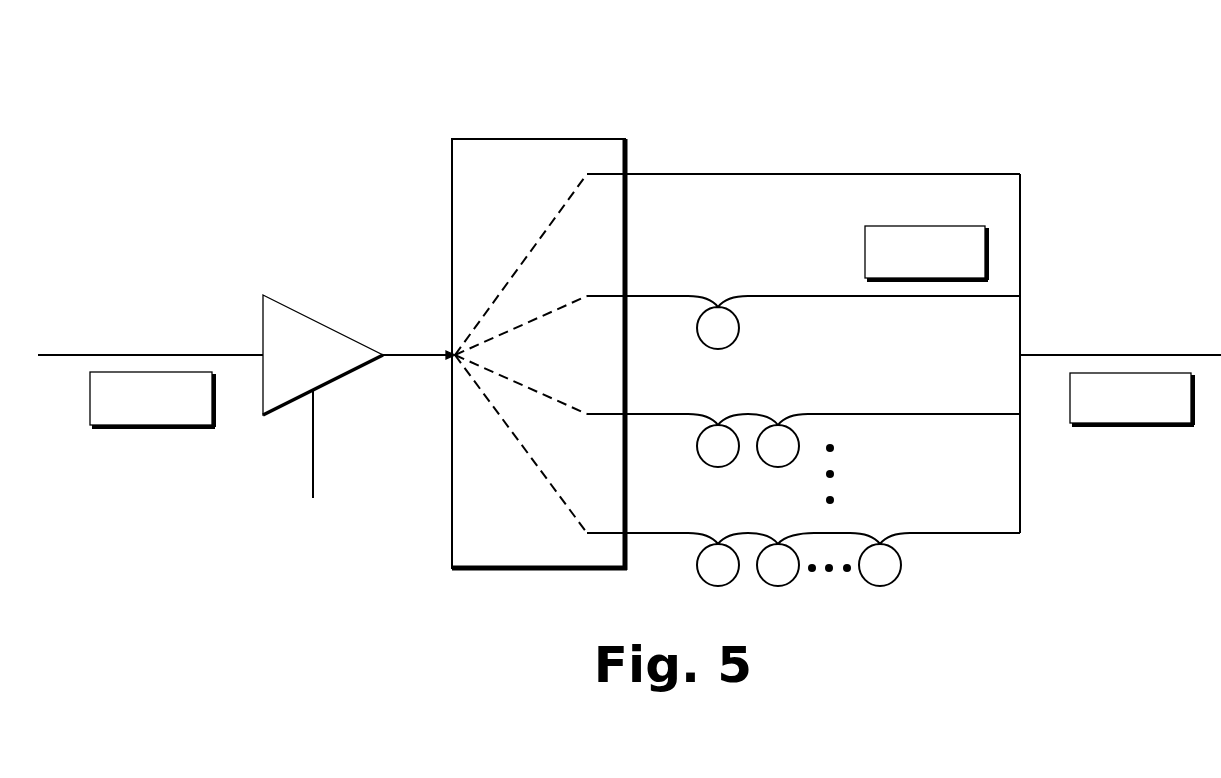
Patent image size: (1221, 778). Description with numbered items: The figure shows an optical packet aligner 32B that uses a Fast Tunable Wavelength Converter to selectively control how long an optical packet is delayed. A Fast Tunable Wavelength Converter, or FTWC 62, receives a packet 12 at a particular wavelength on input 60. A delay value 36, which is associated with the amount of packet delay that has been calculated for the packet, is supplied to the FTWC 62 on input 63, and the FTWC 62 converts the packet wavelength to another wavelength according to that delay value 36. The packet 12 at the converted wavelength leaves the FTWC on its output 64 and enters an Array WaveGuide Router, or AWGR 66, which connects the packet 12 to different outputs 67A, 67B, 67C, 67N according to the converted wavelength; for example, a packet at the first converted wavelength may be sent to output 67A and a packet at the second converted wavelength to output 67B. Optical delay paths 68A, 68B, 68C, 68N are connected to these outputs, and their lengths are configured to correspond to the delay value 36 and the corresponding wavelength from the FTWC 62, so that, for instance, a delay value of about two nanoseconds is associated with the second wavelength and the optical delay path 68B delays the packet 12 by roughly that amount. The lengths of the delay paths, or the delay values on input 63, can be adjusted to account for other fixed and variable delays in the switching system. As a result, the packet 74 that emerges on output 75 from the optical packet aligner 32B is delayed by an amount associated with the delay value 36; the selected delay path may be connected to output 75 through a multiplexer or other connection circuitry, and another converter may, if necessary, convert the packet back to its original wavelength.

The packet 12 is at (148, 427).
The optical packet aligner 32B is at (1084, 113).
The delay value 36 is at (312, 548).
The input 60 is at (85, 354).
The Fast Tunable Wavelength Converter (FTWC) 62 is at (325, 322).
The input 63 is at (298, 490).
The FTWC output line 64 is at (415, 363).
The Array WaveGuide Router (AWGR) 66 is at (538, 574).
The output 67A is at (627, 174).
The output 67B is at (627, 296).
The output 67C is at (627, 414).
The output 67N is at (627, 533).
The optical delay path 68A is at (961, 173).
The optical delay path 68B is at (960, 298).
The optical delay path 68C is at (960, 416).
The optical delay path 68N is at (960, 535).
The packet 74 is at (1128, 430).
The output 75 is at (1192, 354).